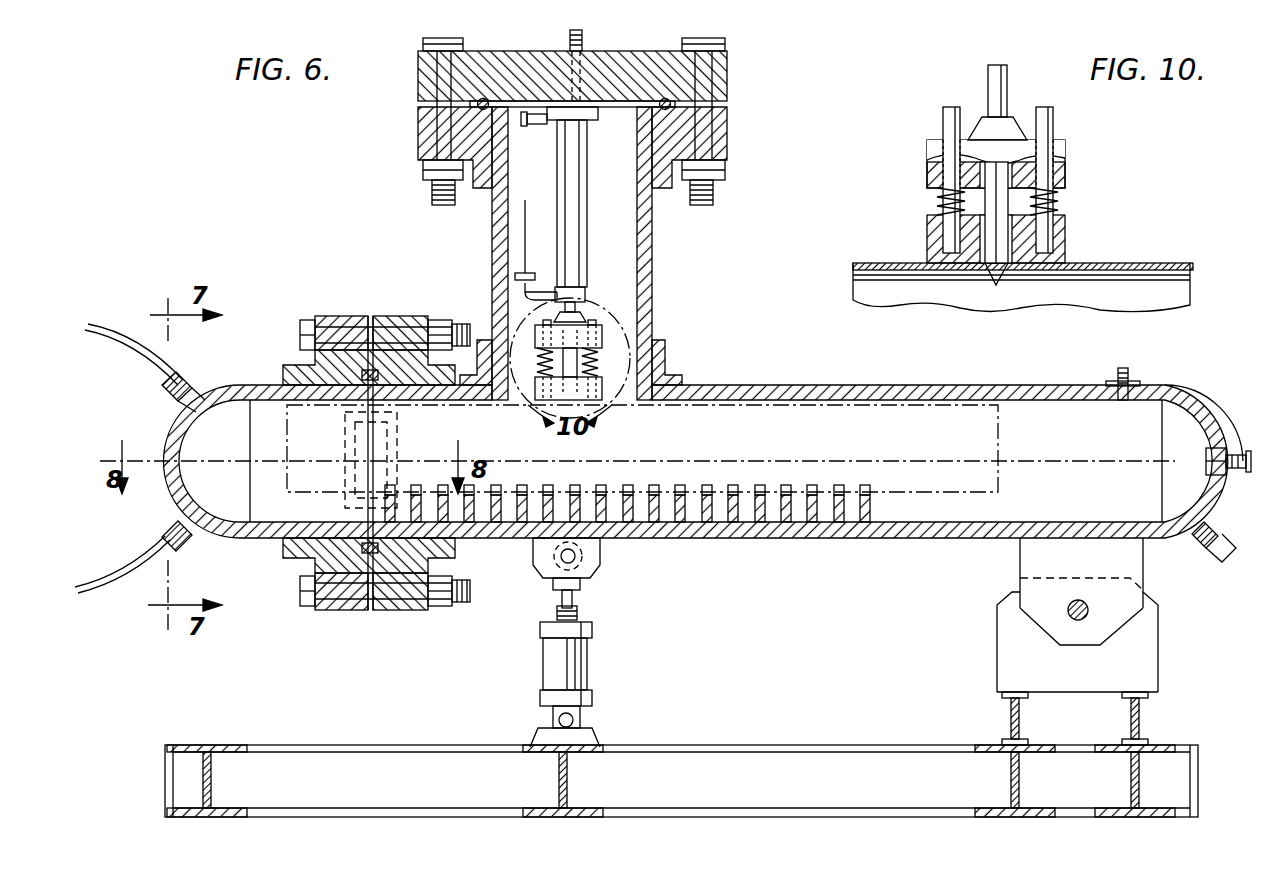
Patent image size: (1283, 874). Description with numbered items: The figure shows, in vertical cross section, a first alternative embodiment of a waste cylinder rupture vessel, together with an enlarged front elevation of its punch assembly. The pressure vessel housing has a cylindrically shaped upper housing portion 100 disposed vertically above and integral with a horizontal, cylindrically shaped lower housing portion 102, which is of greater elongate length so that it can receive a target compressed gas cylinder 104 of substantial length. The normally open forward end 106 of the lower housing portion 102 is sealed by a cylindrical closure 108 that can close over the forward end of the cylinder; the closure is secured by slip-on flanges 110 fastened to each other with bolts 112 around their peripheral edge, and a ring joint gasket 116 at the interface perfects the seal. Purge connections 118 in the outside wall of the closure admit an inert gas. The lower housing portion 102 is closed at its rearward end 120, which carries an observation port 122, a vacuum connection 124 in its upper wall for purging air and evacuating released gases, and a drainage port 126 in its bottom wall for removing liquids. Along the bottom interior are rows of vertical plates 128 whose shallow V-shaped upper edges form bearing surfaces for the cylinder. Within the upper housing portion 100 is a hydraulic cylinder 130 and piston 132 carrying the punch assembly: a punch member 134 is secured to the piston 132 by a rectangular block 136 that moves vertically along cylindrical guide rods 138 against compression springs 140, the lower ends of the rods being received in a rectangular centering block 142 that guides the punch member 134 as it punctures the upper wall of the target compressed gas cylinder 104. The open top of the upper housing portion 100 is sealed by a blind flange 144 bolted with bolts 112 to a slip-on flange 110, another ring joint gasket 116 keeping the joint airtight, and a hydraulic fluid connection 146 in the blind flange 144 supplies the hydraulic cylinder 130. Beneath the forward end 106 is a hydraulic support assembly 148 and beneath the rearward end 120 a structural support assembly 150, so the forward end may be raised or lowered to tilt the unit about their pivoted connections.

In FIG. 6, the upper housing portion 100 is at (648, 260).
In FIG. 6, the lower housing portion 102 is at (746, 538).
In FIG. 6, the target compressed gas cylinder 104 is at (998, 478).
In FIG. 10, the target compressed gas cylinder 104 is at (1150, 263).
In FIG. 6, the forward end 106 is at (366, 437).
In FIG. 6, the cylindrical closure 108 is at (208, 385).
In FIG. 6, the slip-on flanges 110 is at (722, 120).
In FIG. 6, the bolts 112 is at (440, 147).
In FIG. 6, the ring joint gasket 116 is at (485, 99).
In FIG. 6, the purge connections 118 is at (175, 406).
In FIG. 6, the rearward end 120 is at (652, 237).
In FIG. 6, the observation port 122 is at (1250, 460).
In FIG. 6, the vacuum connection 124 is at (1128, 372).
In FIG. 6, the drainage port 126 is at (1226, 553).
In FIG. 6, the vertical plates 128 is at (575, 484).
In FIG. 6, the hydraulic cylinder 130 is at (582, 236).
In FIG. 6, the piston 132 is at (578, 312).
In FIG. 10, the piston 132 is at (1007, 88).
In FIG. 10, the punch member 134 is at (988, 275).
In FIG. 10, the rectangular block 136 is at (927, 154).
In FIG. 10, the cylindrical guide rods 138 is at (943, 118).
In FIG. 10, the compression springs 140 is at (935, 203).
In FIG. 10, the rectangular centering block 142 is at (927, 240).
In FIG. 6, the blind flange 144 is at (724, 80).
In FIG. 6, the hydraulic fluid connection 146 is at (582, 37).
In FIG. 6, the hydraulic support assembly 148 is at (592, 662).
In FIG. 6, the structural support assembly 150 is at (1158, 655).